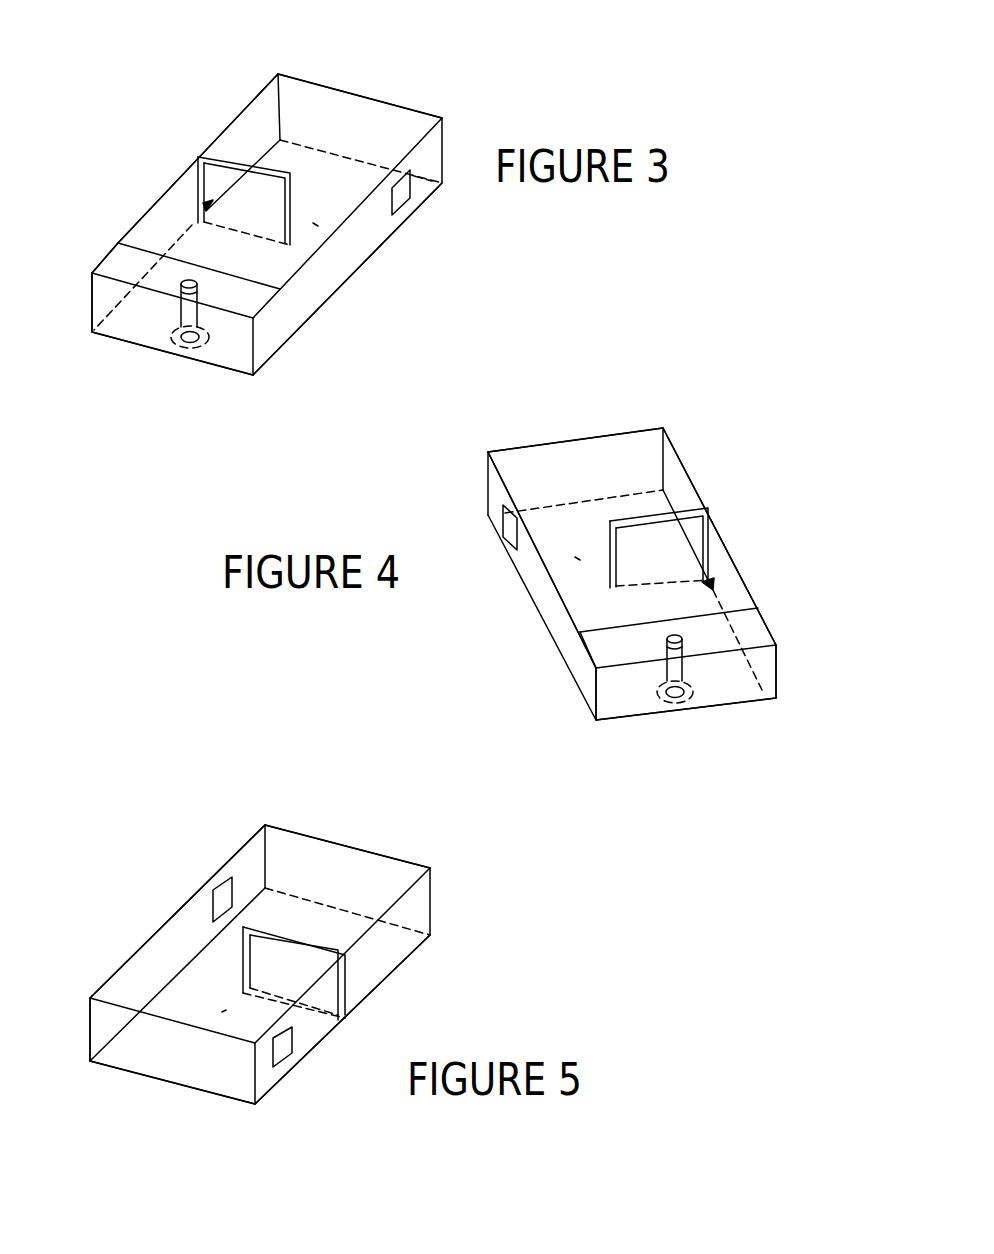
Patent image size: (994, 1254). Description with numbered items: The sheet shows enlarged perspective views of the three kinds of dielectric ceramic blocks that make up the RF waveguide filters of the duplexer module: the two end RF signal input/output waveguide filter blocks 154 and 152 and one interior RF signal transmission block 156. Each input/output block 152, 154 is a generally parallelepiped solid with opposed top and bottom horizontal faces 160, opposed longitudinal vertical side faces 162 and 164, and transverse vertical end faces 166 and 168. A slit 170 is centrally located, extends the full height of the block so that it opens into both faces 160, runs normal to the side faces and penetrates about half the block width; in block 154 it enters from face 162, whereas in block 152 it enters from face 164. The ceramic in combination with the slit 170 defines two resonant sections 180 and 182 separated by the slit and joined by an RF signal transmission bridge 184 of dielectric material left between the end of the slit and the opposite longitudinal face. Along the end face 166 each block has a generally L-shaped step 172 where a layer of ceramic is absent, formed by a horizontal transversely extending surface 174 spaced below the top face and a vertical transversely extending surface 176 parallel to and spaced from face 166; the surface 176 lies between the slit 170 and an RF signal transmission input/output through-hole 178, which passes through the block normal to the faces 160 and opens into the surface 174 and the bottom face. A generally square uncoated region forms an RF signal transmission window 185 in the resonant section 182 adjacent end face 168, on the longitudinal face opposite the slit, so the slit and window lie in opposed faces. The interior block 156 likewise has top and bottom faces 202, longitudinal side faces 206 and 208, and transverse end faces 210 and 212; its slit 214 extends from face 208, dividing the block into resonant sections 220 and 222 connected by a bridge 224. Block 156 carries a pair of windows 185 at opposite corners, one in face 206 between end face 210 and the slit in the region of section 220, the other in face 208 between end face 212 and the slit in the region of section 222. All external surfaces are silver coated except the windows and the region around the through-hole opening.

In FIG. 4, the RF signal input/output waveguide filter block 152 is at (642, 368).
In FIG. 3, the RF signal input/output waveguide filter block 154 is at (140, 144).
In FIG. 5, the internal RF signal transmission block 156 is at (352, 790).
In FIG. 3, the exterior bottom and top horizontal faces 160 is at (296, 103).
In FIG. 4, the exterior bottom and top horizontal faces 160 is at (647, 447).
In FIG. 3, the longitudinal exterior vertical side face 162 is at (150, 237).
In FIG. 4, the longitudinal exterior vertical side face 162 is at (547, 595).
In FIG. 3, the longitudinal exterior vertical side face 164 is at (343, 268).
In FIG. 4, the longitudinal exterior vertical side face 164 is at (740, 577).
In FIG. 3, the transverse vertical end exterior side face 166 is at (215, 347).
In FIG. 4, the transverse vertical end exterior side face 166 is at (722, 690).
In FIG. 3, the transverse vertical end exterior side face 168 is at (402, 123).
In FIG. 4, the transverse vertical end exterior side face 168 is at (562, 468).
In FIG. 3, the slit or slot 170 is at (233, 150).
In FIG. 4, the slit or slot 170 is at (687, 507).
In FIG. 3, the step 172 is at (120, 268).
In FIG. 4, the step 172 is at (757, 630).
In FIG. 3, the horizontal transversely extending surface of the step 174 is at (237, 300).
In FIG. 4, the horizontal transversely extending surface of the step 174 is at (726, 692).
In FIG. 3, the vertical transversely extending surface of the step 176 is at (120, 241).
In FIG. 4, the vertical transversely extending surface of the step 176 is at (609, 640).
In FIG. 3, the RF signal transmission input/output through-hole 178 is at (178, 315).
In FIG. 4, the RF signal transmission input/output through-hole 178 is at (658, 680).
In FIG. 3, the resonant section 180 is at (252, 266).
In FIG. 4, the resonant section 180 is at (689, 617).
In FIG. 3, the resonant section 182 is at (352, 141).
In FIG. 4, the resonant section 182 is at (622, 489).
In FIG. 3, the RF signal transmission bridge 184 is at (313, 223).
In FIG. 4, the RF signal transmission bridge 184 is at (575, 557).
In FIG. 3, the RF signal transmission window 185 is at (413, 198).
In FIG. 4, the RF signal transmission window 185 is at (493, 528).
In FIG. 5, the RF signal transmission window 185 is at (227, 874).
In FIG. 5, the exterior bottom and top horizontal faces 202 is at (278, 835).
In FIG. 5, the longitudinal exterior vertical side face 206 is at (158, 963).
In FIG. 5, the longitudinal exterior vertical side face 208 is at (390, 958).
In FIG. 5, the transverse end exterior vertical side face 210 is at (370, 877).
In FIG. 5, the transverse end exterior vertical side face 212 is at (177, 1057).
In FIG. 5, the slit or slot 214 is at (300, 943).
In FIG. 5, the resonant section 220 is at (342, 886).
In FIG. 5, the resonant section 222 is at (229, 1010).
In FIG. 5, the RF signal transmission bridge 224 is at (198, 923).